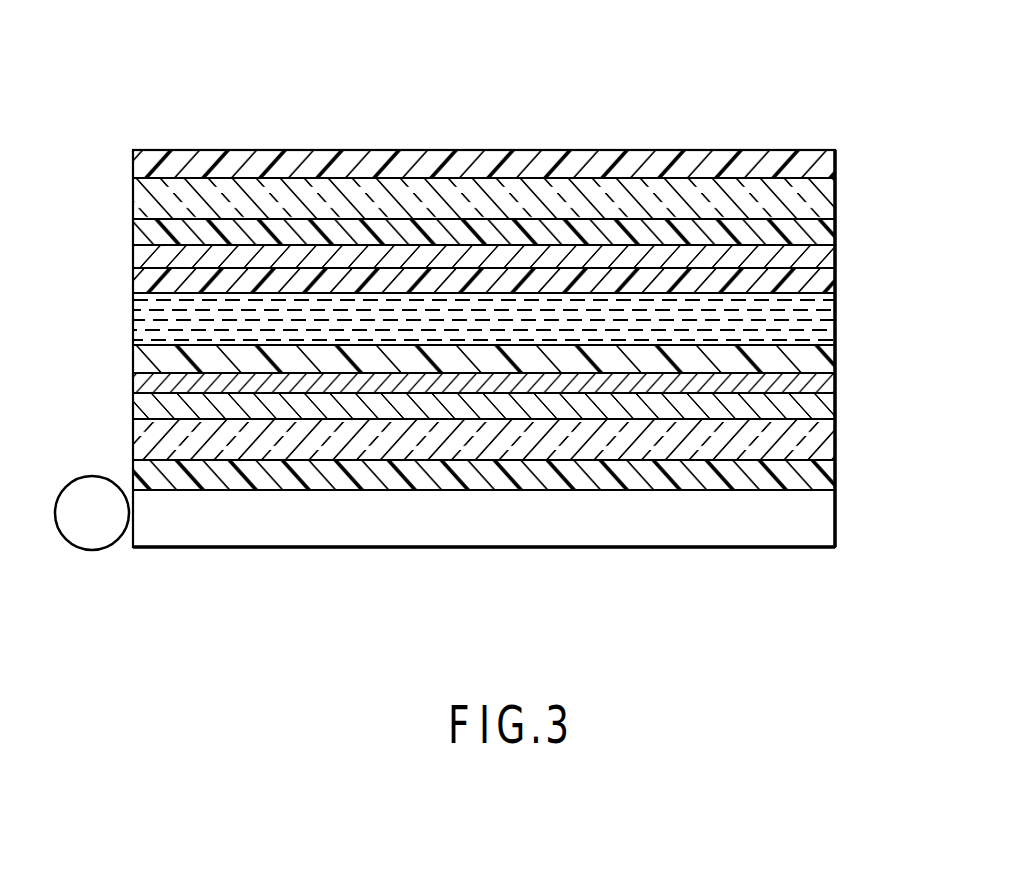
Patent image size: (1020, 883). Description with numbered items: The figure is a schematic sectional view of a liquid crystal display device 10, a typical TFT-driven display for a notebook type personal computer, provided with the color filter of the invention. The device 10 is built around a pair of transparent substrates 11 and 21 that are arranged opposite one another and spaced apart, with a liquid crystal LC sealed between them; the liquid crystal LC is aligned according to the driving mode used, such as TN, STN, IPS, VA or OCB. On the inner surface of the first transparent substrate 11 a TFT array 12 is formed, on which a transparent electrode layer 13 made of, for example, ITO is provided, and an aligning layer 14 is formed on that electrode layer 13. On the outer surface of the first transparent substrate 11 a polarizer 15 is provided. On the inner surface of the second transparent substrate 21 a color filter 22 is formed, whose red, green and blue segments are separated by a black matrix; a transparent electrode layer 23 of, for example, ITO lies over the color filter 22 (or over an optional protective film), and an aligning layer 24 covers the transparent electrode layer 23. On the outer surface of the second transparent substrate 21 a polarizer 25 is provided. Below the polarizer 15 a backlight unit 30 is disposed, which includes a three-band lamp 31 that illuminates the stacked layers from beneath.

The liquid crystal display device 10 is at (640, 122).
The polarizer 25 is at (827, 170).
The second transparent substrate 21 is at (143, 205).
The color filter 22 is at (827, 233).
The transparent electrode layer 23 is at (143, 259).
The aligning layer 24 is at (827, 284).
The liquid crystal LC is at (143, 311).
The aligning layer 14 is at (838, 348).
The transparent electrode layer 13 is at (143, 382).
The TFT array 12 is at (827, 398).
The first transparent substrate 11 is at (143, 443).
The polarizer 15 is at (827, 465).
The backlight unit 30 is at (610, 527).
The three-band lamp 31 is at (82, 525).